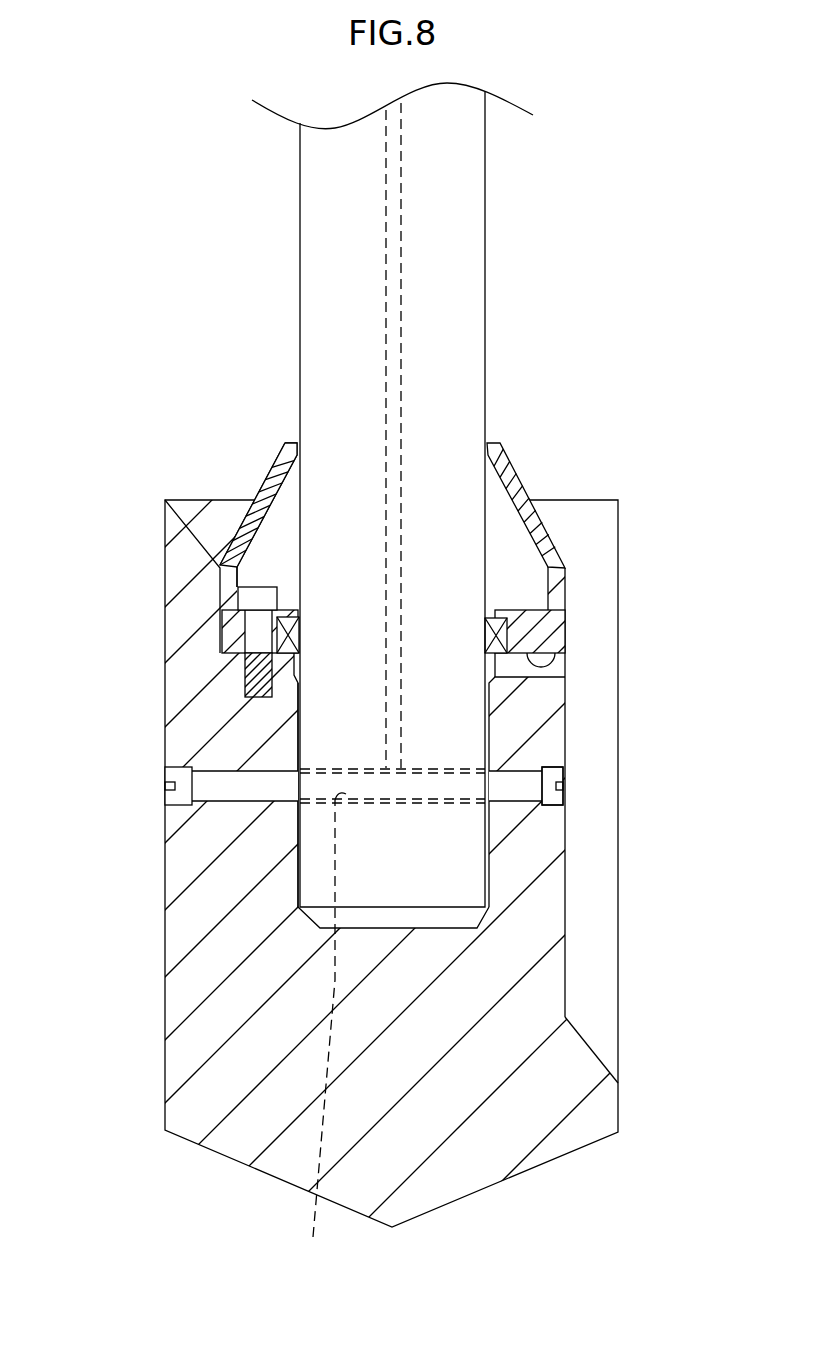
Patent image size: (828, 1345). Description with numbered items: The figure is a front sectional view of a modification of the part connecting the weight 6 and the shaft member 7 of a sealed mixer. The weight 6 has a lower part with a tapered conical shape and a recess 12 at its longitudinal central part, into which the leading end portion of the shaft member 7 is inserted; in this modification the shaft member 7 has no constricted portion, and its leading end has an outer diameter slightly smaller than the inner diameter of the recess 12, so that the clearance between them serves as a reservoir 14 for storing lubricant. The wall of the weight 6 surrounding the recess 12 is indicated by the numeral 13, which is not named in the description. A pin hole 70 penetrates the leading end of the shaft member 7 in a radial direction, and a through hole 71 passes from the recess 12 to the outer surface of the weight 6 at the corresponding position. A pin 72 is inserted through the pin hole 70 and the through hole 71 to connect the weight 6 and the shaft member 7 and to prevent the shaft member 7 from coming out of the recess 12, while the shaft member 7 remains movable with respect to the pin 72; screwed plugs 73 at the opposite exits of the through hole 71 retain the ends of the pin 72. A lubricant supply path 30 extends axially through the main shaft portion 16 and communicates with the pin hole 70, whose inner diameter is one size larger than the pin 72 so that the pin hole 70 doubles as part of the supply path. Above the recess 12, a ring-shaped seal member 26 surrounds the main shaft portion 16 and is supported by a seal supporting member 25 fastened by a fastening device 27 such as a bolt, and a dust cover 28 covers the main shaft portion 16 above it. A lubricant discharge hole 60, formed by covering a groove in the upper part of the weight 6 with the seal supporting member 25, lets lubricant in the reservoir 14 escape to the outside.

The weight 6 is at (605, 1105).
The shaft member 7 is at (436, 495).
The recess 12 is at (298, 868).
The cylindrical portion 13 is at (490, 737).
The reservoir 14 is at (480, 920).
The main shaft portion 16 is at (473, 278).
The seal supporting member 25 is at (258, 695).
The seal member 26 is at (245, 640).
The fastening device 27 is at (248, 600).
The dust cover 28 is at (245, 525).
The lubricant supply path 30 is at (400, 360).
The lubricant discharge hole 60 is at (542, 660).
The pin hole 70 is at (321, 1030).
The through hole 71 is at (205, 800).
The pin 72 is at (543, 765).
The screwed plugs 73 is at (180, 767).